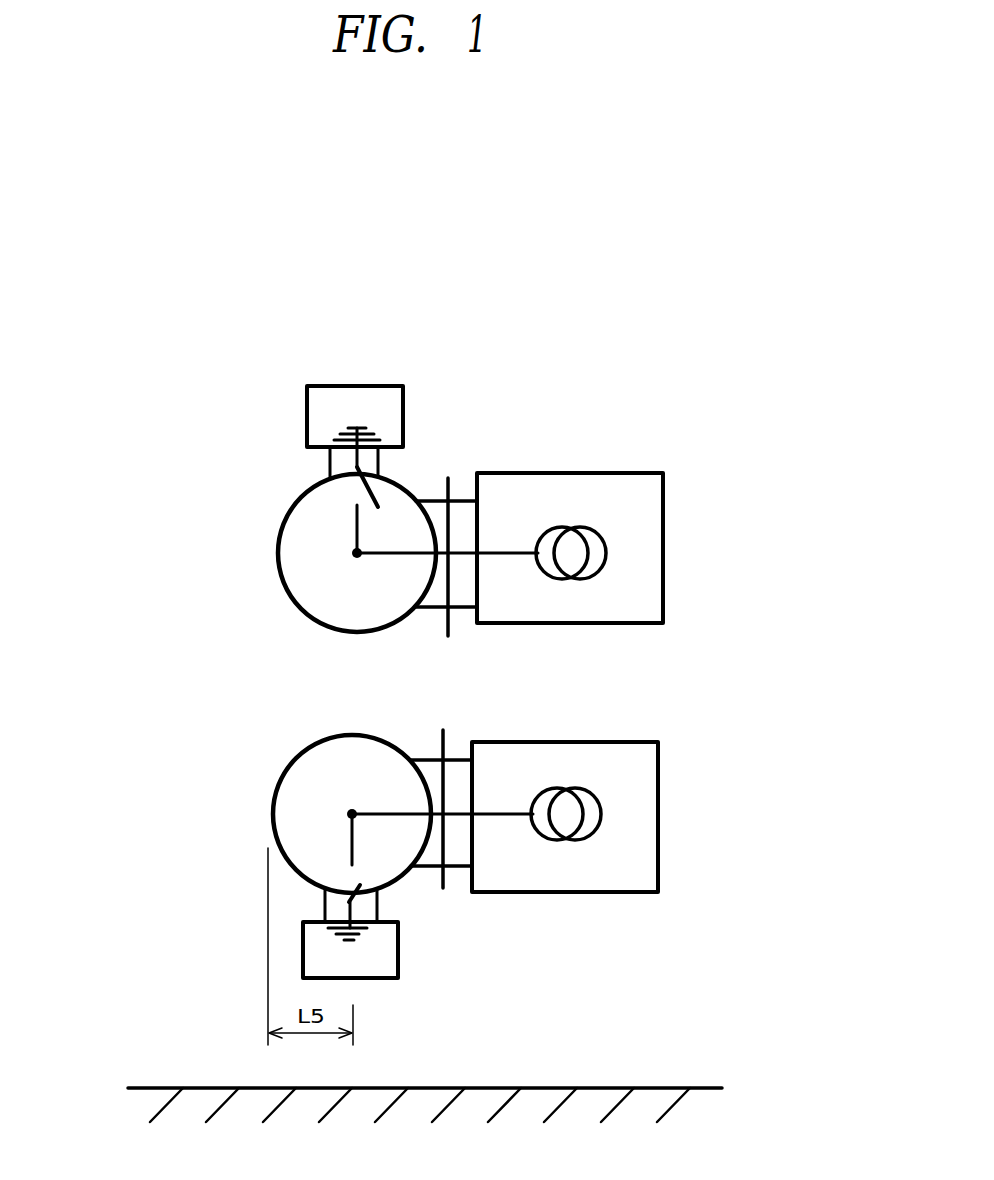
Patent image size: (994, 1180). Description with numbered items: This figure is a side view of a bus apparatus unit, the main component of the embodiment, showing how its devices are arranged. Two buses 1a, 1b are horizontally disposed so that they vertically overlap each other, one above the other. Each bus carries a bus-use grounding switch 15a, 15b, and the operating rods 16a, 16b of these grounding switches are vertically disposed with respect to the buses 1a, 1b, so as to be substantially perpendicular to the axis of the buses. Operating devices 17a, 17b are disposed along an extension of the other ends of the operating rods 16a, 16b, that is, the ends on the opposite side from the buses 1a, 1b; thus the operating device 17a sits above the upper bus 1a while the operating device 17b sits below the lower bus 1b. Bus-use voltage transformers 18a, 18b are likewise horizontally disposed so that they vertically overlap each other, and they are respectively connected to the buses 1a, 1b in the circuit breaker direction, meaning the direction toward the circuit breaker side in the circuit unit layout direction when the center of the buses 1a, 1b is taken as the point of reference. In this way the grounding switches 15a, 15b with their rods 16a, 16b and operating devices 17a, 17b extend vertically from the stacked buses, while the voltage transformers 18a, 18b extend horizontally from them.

The bus 1a is at (357, 553).
The bus 1b is at (352, 814).
The bus-use grounding switch 15a is at (381, 496).
The bus-use grounding switch 15b is at (350, 902).
The operating rod 16a is at (332, 467).
The operating rod 16b is at (325, 913).
The operating device 17a is at (363, 385).
The operating device 17b is at (398, 958).
The bus-use voltage transformer 18a is at (602, 532).
The bus-use voltage transformer 18b is at (597, 793).